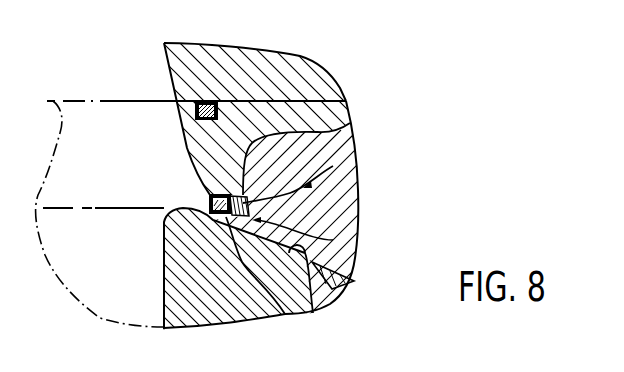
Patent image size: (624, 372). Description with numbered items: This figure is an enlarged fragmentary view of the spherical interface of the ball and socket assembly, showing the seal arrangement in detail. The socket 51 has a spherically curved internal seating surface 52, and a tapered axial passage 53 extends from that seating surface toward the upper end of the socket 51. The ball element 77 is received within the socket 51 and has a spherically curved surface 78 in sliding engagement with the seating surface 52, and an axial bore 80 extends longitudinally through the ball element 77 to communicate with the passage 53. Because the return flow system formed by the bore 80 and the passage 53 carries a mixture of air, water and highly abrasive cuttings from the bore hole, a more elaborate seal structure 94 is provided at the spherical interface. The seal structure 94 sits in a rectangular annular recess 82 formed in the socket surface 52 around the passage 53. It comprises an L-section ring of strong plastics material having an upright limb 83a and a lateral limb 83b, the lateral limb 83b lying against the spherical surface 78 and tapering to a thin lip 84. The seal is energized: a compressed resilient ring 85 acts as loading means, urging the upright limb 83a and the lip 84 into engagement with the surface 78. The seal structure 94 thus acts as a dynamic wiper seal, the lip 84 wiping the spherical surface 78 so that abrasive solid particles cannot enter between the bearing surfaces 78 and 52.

The socket 51 is at (338, 194).
The spherically curved internal seating surface 52 is at (356, 261).
The tapered axial passage 53 is at (105, 153).
The ball element 77 is at (210, 297).
The spherically curved surface 78 is at (313, 313).
The axial bore 80 is at (102, 297).
The rectangular annular recess 82 is at (350, 123).
The upright limb 83a is at (333, 166).
The lateral limb 83b is at (285, 314).
The lip 84 is at (210, 206).
The compressed resilient ring 85 is at (212, 195).
The seal structure 94 is at (333, 240).